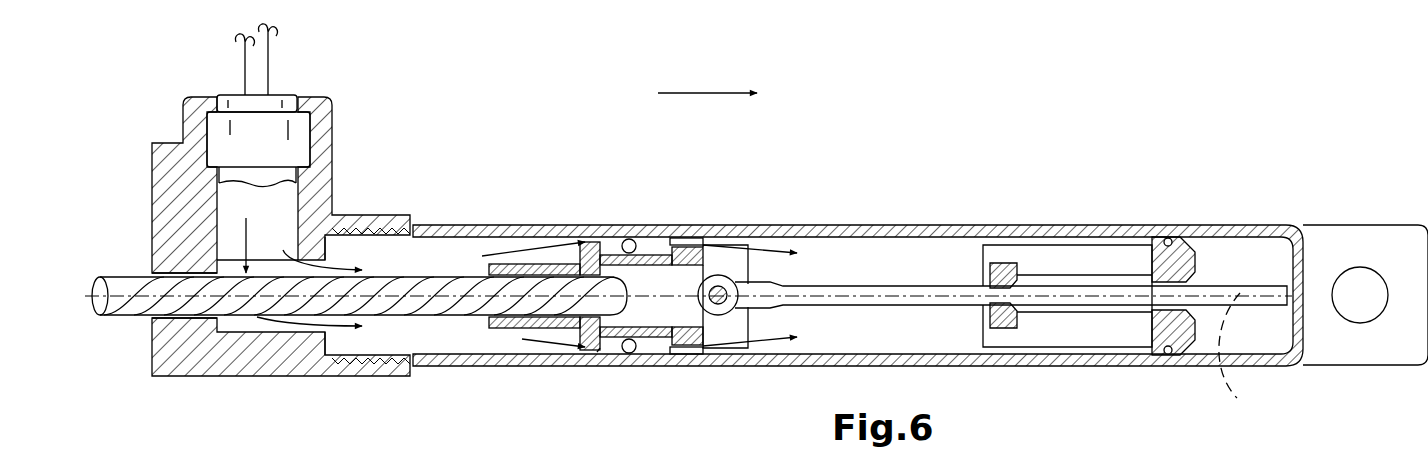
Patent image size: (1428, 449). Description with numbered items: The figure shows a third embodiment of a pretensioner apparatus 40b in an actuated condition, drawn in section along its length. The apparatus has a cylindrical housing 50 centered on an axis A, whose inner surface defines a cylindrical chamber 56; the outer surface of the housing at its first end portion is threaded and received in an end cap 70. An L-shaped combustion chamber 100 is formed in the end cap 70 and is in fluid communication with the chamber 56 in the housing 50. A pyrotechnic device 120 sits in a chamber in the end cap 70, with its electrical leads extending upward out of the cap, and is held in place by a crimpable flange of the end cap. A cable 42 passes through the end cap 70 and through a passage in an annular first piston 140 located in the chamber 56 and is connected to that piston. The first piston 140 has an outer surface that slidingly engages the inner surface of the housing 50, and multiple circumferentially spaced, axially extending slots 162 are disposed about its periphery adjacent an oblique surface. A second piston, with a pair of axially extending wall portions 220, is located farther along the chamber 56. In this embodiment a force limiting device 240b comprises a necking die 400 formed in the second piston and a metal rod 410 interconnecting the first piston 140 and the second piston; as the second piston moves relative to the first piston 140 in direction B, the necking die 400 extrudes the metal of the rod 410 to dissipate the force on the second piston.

The cable 42 is at (116, 300).
The cylindrical housing 50 is at (693, 224).
The cylindrical chamber 56 is at (419, 265).
The end cap 70 is at (332, 172).
The L-shaped combustion chamber 100 is at (232, 320).
The pyrotechnic device 120 is at (286, 94).
The first piston 140 is at (533, 264).
The slots 162 is at (597, 353).
The wall portions 220 is at (1195, 260).
The force limiting device 240b is at (1039, 266).
The necking die 400 is at (987, 273).
The metal rod 410 is at (832, 298).
The pretensioner apparatus 40b is at (920, 248).
The axis A is at (1236, 355).
The direction B is at (707, 84).